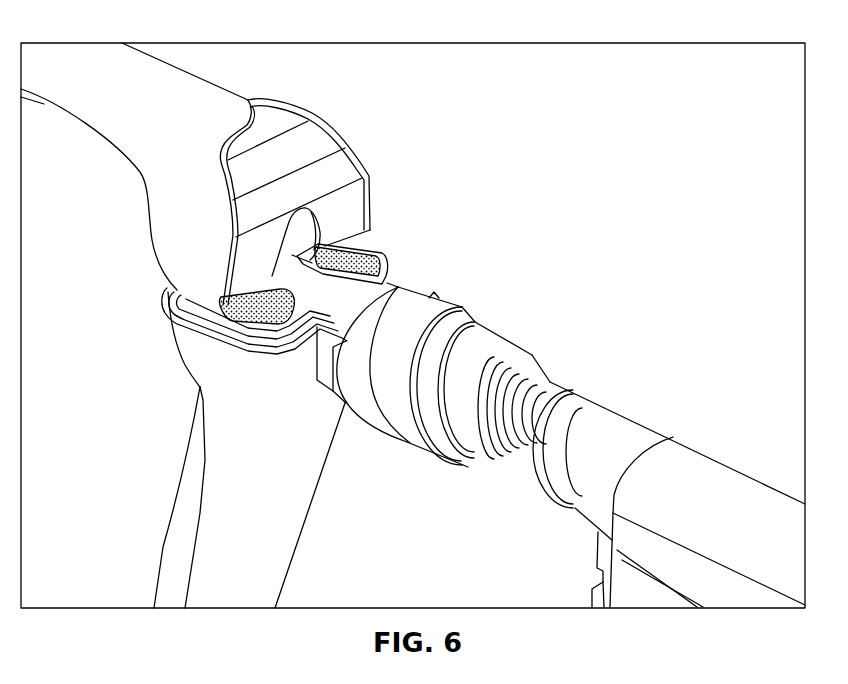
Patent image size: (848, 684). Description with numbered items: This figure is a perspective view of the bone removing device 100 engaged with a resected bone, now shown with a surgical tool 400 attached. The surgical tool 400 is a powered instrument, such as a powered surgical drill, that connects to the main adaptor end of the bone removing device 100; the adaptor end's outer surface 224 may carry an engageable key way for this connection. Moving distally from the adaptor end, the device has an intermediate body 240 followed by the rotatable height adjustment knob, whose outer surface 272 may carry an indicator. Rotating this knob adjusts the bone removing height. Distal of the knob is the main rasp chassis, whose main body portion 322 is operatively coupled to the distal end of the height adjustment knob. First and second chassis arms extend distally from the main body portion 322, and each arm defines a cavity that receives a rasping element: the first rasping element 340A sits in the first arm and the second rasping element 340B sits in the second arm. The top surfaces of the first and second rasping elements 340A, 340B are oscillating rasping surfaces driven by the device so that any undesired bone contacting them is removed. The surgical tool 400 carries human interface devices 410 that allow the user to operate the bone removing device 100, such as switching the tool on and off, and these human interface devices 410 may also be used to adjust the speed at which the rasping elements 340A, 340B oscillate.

The bone removing device 100 is at (583, 217).
The first rasping element 340A is at (372, 227).
The second rasping element 340B is at (243, 306).
The main body portion 322 is at (405, 303).
The outer surface 272 is at (470, 320).
The intermediate body 240 is at (478, 338).
The outer surface 224 is at (530, 358).
The surgical tool 400 is at (699, 440).
The human interface devices 410 is at (580, 578).